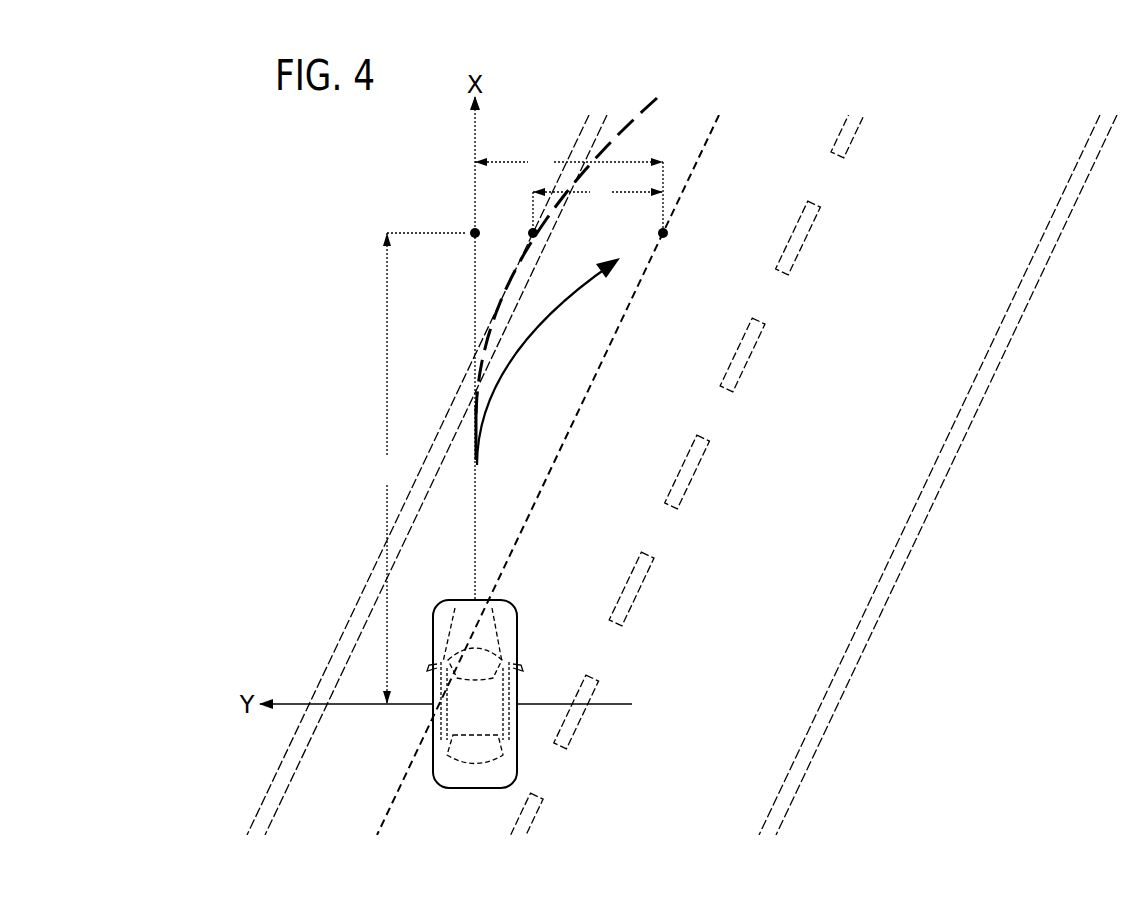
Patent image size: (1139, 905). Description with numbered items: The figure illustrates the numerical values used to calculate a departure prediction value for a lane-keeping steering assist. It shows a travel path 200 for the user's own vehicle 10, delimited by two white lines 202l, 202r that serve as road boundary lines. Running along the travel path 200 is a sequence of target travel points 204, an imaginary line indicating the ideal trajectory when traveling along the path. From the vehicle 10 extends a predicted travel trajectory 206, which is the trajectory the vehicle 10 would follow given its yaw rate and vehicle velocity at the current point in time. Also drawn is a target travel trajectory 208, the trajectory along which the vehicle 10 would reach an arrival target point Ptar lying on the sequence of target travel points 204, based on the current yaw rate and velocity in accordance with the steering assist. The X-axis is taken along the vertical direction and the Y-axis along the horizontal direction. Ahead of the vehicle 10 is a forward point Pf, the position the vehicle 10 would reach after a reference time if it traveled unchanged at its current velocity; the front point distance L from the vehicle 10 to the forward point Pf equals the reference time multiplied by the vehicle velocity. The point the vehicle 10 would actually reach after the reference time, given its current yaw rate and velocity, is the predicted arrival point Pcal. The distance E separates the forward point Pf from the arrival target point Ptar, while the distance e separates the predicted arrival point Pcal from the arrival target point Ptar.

The user's own vehicle 10 is at (517, 613).
The travel path 200 is at (310, 793).
The white line 202l is at (343, 629).
The white line 202r is at (690, 488).
The sequence of target travel points 204 is at (625, 313).
The predicted travel trajectory 206 is at (636, 104).
The target travel trajectory 208 is at (557, 300).
The forward point Pf is at (469, 240).
The predicted arrival point Pcal is at (528, 230).
The arrival target point Ptar is at (667, 240).
The distance between forward point and arrival target point E is at (569, 191).
The distance between predicted arrival point and arrival target point e is at (598, 205).
The front point distance L is at (423, 468).